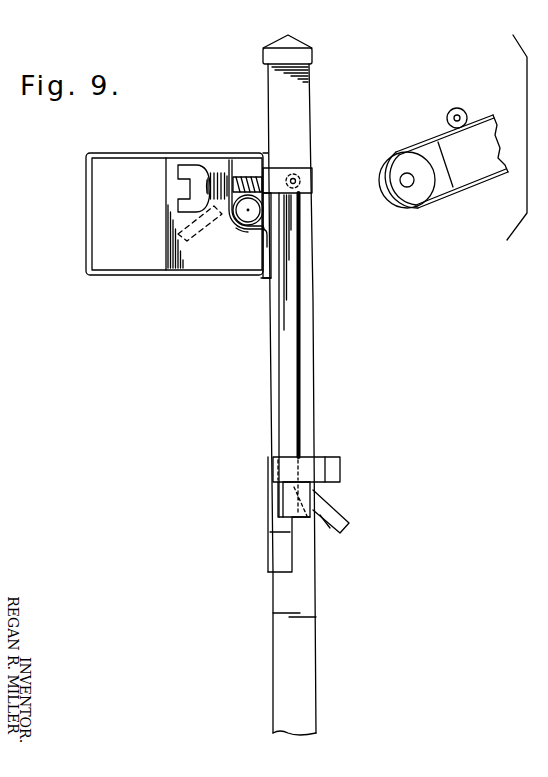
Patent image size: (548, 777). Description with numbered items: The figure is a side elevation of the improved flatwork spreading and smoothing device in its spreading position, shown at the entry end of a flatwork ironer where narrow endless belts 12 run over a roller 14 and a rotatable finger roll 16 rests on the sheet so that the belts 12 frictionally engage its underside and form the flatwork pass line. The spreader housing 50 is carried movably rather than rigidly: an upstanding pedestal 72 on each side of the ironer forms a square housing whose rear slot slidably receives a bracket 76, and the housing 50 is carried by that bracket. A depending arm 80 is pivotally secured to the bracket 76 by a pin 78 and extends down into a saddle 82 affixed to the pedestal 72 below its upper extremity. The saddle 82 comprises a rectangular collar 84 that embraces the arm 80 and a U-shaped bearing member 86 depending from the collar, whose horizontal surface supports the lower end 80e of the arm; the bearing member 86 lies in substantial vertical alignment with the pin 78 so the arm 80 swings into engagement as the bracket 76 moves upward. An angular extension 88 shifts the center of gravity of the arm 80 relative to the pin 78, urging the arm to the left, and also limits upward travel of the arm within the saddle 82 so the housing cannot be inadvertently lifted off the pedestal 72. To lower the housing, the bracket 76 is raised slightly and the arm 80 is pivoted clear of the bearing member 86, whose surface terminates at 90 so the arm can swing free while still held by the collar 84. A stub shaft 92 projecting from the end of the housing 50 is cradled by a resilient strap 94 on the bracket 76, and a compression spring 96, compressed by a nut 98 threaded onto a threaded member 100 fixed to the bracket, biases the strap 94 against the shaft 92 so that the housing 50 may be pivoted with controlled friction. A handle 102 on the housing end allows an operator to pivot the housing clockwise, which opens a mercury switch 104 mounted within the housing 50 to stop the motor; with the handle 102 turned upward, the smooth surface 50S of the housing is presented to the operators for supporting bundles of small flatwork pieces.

The endless belts 12 is at (494, 183).
The roller 14 is at (410, 195).
The finger roll 16 is at (466, 110).
The housing 50 is at (171, 153).
The smooth surface 50S is at (166, 185).
The pedestal 72 is at (300, 97).
The bracket 76 is at (275, 230).
The pin 78 is at (299, 180).
The depending arm 80 is at (296, 342).
The lower end of arm 80e is at (278, 515).
The saddle 82 is at (270, 480).
The rectangular collar 84 is at (333, 462).
The U-shaped bearing member 86 is at (290, 503).
The angular extension 88 is at (335, 515).
The surface termination 90 is at (313, 520).
The stub shaft 92 is at (262, 209).
The strap 94 is at (233, 223).
The compression spring 96 is at (212, 172).
The nut 98 is at (178, 205).
The threaded member 100 is at (261, 176).
The handle 102 is at (86, 190).
The mercury switch 104 is at (176, 233).